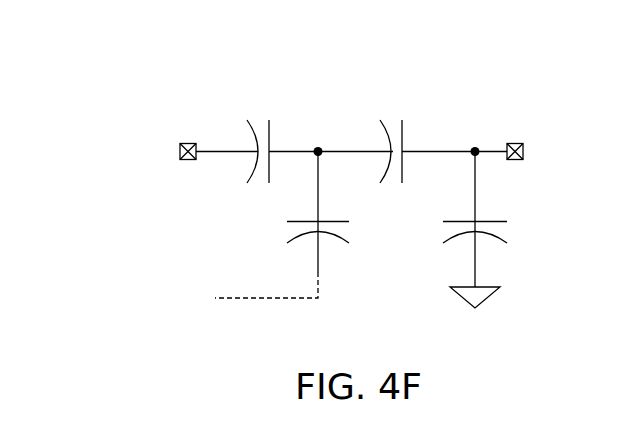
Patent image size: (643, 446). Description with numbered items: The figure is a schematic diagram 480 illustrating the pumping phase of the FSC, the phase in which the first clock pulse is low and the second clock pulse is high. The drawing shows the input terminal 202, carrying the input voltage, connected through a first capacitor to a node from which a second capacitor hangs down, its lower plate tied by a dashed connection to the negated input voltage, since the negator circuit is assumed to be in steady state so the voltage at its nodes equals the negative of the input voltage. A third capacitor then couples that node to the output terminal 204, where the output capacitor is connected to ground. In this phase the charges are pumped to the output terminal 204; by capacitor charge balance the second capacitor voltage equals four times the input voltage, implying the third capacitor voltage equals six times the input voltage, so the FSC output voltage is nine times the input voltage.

The schematic diagram 480 is at (138, 67).
The input terminal 202 is at (180, 152).
The output terminal 204 is at (523, 152).